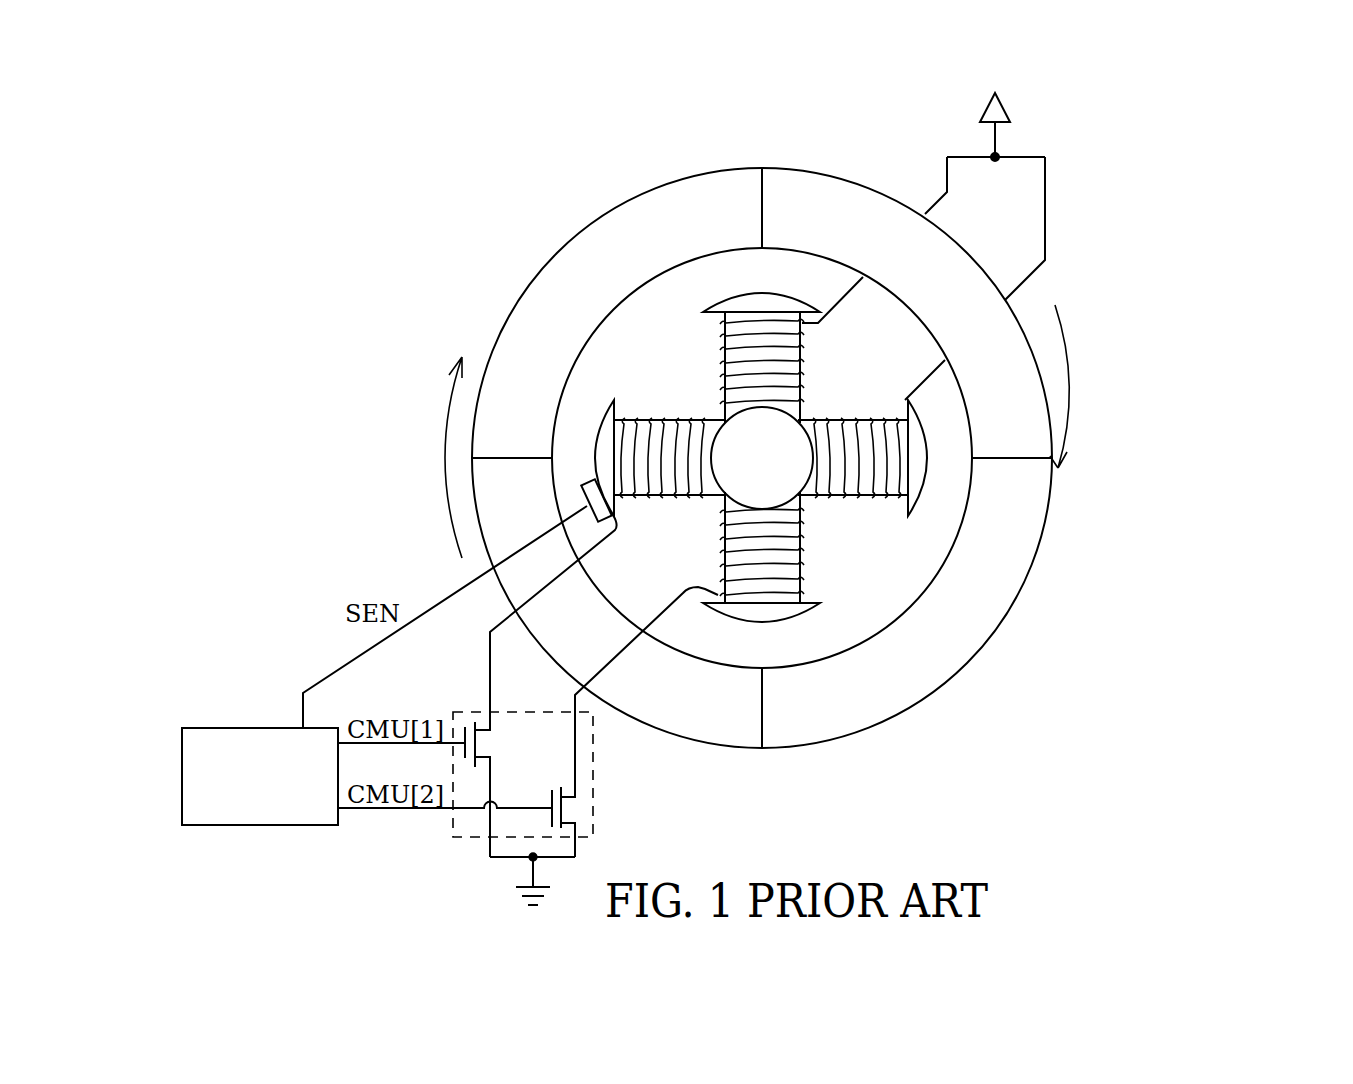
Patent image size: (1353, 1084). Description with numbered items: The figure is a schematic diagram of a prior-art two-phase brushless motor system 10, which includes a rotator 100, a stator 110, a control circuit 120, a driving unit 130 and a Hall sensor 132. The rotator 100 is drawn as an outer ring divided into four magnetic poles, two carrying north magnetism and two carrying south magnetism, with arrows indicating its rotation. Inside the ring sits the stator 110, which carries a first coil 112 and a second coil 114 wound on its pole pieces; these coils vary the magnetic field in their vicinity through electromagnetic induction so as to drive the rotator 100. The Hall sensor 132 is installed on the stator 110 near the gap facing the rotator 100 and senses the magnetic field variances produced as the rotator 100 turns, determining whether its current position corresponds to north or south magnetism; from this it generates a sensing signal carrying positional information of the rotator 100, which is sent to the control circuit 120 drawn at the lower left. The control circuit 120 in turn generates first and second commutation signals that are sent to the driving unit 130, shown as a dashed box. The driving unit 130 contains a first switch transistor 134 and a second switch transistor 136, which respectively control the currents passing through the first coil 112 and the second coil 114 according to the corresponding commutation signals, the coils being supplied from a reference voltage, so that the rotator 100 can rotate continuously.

The two-phase brushless motor system 10 is at (1165, 100).
The rotator 100 is at (637, 195).
The stator 110 is at (745, 293).
The first coil 112 is at (642, 418).
The second coil 114 is at (800, 553).
The control circuit 120 is at (205, 728).
The driving unit 130 is at (453, 833).
The Hall sensor 132 is at (590, 483).
The first switch transistor 134 is at (490, 742).
The second switch transistor 136 is at (575, 812).